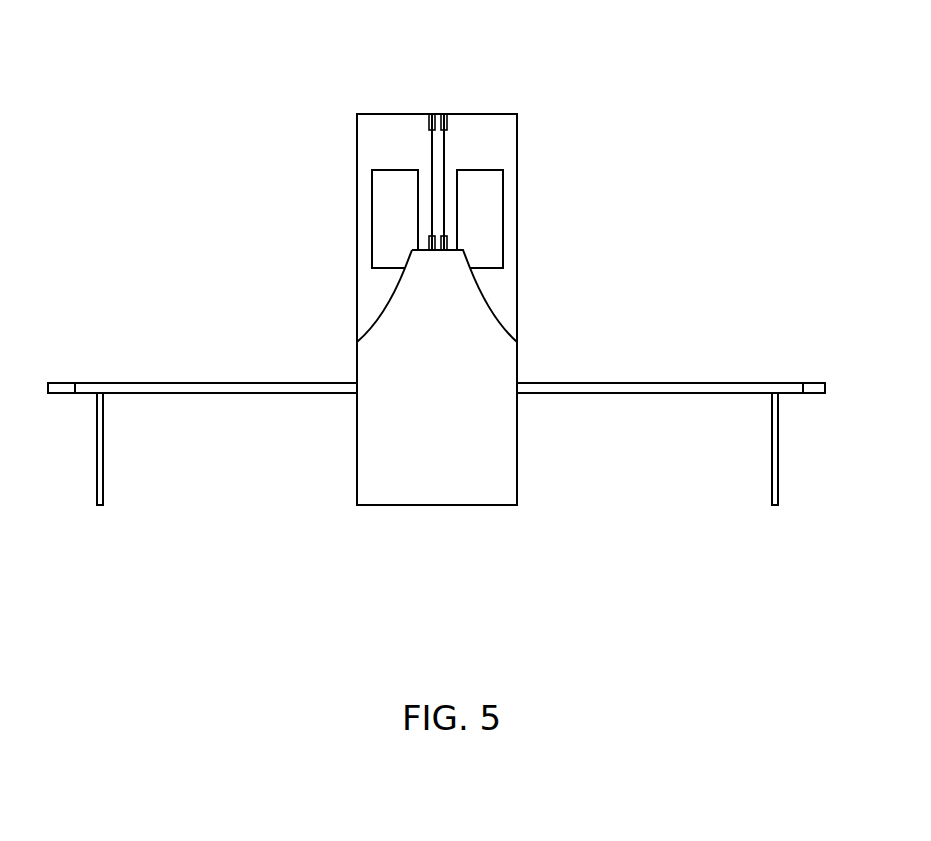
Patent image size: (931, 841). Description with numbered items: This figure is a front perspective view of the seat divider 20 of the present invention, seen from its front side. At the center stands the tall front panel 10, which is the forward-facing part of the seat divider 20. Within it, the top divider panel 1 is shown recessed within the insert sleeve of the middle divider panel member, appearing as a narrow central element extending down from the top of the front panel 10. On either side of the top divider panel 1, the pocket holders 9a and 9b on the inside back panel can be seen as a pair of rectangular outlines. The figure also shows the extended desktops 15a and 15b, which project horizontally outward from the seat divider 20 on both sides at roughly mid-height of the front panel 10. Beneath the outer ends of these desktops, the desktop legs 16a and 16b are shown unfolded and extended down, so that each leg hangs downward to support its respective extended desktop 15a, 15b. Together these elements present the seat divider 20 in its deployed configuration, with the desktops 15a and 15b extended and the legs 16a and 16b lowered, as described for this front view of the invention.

The seat divider 20 is at (283, 122).
The front panel 10 is at (443, 486).
The top divider panel 1 is at (408, 153).
The pocket holder 9a is at (501, 229).
The pocket holder 9b is at (374, 229).
The extended desktop 15a is at (705, 358).
The extended desktop 15b is at (142, 358).
The desktop leg 16a is at (748, 479).
The desktop leg 16b is at (122, 480).